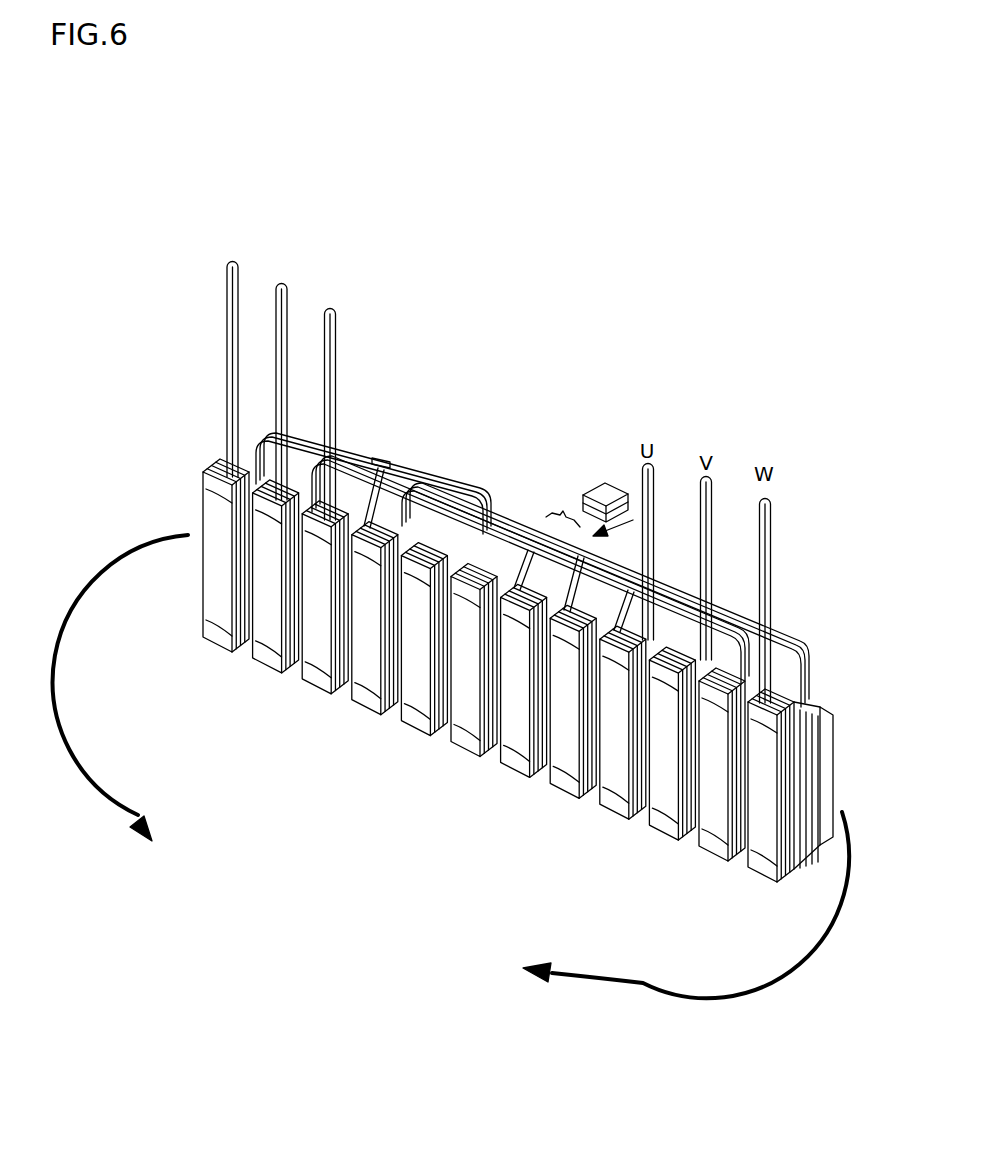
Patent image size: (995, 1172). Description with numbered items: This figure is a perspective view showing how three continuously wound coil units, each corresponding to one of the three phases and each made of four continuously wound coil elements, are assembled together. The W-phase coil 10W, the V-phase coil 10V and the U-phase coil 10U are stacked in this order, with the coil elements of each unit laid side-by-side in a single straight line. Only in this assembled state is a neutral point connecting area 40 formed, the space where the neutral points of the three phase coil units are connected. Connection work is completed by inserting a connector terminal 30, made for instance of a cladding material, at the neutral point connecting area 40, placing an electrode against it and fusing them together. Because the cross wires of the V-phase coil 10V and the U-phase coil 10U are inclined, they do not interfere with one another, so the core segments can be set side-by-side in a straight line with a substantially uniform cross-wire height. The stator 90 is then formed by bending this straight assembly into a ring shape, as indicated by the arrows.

The U-phase coil 10U is at (245, 222).
The V-phase coil 10V is at (303, 249).
The W-phase coil 10W is at (358, 281).
The connector terminal 30 is at (601, 481).
The neutral point connecting area 40 is at (563, 511).
The stator 90 is at (255, 913).